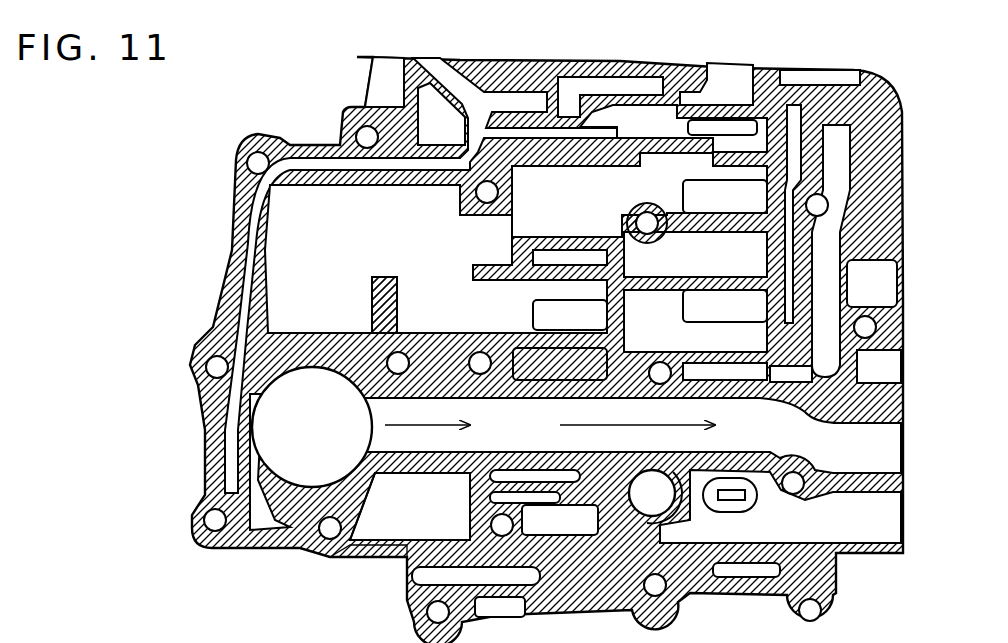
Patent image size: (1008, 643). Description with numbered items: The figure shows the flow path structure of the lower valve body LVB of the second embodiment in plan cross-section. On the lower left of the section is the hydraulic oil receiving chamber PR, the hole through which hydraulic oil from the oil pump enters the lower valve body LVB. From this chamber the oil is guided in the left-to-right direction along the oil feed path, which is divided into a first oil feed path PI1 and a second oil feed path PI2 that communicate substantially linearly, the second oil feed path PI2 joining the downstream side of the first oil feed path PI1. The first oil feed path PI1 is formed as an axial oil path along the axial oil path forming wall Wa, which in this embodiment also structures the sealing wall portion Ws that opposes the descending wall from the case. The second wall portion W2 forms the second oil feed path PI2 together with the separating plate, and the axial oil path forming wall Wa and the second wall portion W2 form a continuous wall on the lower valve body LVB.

The lower valve body LVB is at (232, 252).
The hydraulic oil receiving chamber PR is at (287, 430).
The first oil feed path PI1 is at (443, 423).
The second oil feed path PI2 is at (637, 425).
The second wall portion W2 is at (714, 452).
The axial oil path forming wall Wa is at (453, 463).
The sealing wall portion Ws is at (383, 553).